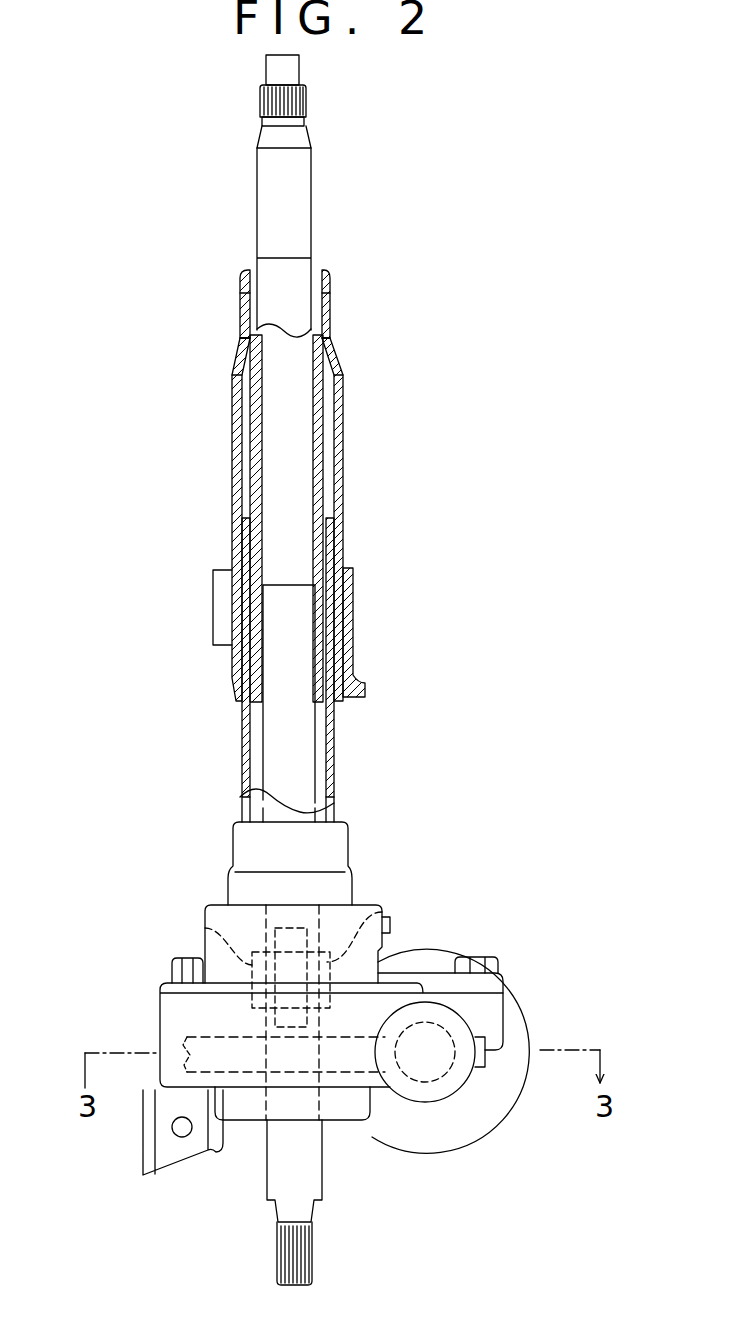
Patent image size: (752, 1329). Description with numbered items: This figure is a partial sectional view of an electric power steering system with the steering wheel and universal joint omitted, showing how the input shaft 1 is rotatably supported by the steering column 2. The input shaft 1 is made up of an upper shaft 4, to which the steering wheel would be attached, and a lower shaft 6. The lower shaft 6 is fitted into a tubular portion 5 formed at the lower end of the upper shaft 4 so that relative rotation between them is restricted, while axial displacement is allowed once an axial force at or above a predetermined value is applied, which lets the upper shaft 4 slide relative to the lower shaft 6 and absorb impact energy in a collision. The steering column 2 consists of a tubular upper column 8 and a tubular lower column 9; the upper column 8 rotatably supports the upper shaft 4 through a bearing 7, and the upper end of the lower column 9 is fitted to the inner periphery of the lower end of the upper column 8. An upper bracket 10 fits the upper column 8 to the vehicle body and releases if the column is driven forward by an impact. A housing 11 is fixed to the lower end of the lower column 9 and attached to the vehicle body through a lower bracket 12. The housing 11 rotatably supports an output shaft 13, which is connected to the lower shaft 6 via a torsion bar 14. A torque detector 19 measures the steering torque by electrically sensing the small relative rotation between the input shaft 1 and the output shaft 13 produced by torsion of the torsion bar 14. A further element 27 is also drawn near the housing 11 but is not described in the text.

The input shaft 1 is at (247, 207).
The steering column 2 is at (229, 440).
The upper shaft 4 is at (300, 186).
The tubular portion 5 is at (316, 557).
The lower shaft 6 is at (300, 762).
The bearing 7 is at (325, 272).
The upper column 8 is at (232, 393).
The lower column 9 is at (242, 768).
The upper bracket 10 is at (216, 620).
The housing 11 is at (173, 1013).
The lower bracket 12 is at (148, 1160).
The output shaft 13 is at (307, 1163).
The torsion bar 14 is at (383, 912).
The torque detector 19 is at (205, 928).
The sensor connector 27 is at (485, 1062).